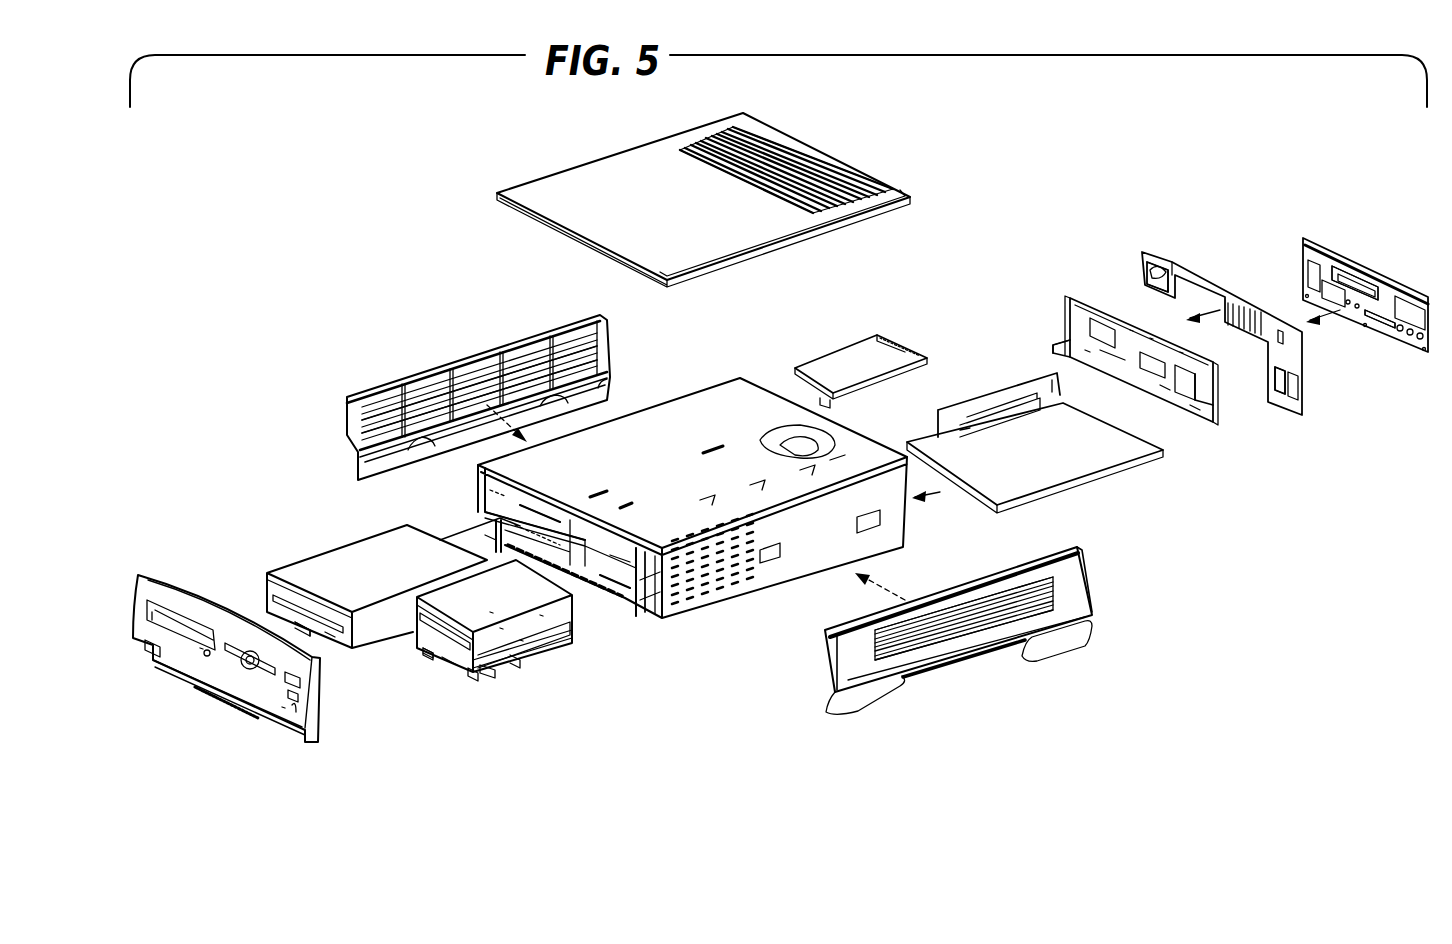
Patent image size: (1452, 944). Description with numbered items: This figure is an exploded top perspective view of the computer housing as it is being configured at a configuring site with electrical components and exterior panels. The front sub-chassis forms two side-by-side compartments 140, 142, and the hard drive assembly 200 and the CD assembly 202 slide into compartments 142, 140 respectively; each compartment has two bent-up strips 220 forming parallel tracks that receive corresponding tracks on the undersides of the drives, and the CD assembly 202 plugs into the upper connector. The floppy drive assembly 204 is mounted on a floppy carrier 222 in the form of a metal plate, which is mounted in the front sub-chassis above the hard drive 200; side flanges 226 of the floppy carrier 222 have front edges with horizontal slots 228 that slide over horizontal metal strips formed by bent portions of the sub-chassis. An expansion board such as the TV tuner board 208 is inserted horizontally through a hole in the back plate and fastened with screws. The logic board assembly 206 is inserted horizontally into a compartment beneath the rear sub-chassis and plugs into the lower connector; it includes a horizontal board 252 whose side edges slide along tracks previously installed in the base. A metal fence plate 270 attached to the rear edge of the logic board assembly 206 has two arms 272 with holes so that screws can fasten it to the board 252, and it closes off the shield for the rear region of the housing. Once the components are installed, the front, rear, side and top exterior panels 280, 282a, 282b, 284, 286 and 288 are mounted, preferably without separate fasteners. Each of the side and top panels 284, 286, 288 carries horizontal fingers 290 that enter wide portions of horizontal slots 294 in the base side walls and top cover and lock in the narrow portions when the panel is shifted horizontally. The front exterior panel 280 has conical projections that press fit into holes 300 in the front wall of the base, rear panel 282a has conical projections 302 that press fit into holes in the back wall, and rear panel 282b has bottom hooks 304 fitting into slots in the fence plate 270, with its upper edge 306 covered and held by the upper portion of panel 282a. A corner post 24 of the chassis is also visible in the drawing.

The chassis corner post 24 is at (642, 598).
The compartment 140 is at (495, 485).
The compartment 142 is at (692, 498).
The hard drive assembly 200 is at (525, 655).
The CD assembly 202 is at (423, 540).
The floppy drive assembly 204 is at (572, 612).
The logic board assembly 206 is at (1013, 382).
The TV tuner board 208 is at (903, 338).
The bent-up strips 220 is at (575, 520).
The floppy carrier 222 is at (470, 676).
The side flanges 226 is at (410, 645).
The horizontal slots 228 is at (560, 638).
The horizontal board 252 is at (1068, 472).
The fence plate 270 is at (1072, 297).
The arms 272 is at (1058, 340).
The front exterior panel 280 is at (270, 733).
The rear panel 282a is at (1232, 285).
The rear panel 282b is at (1343, 248).
The side exterior panel 284 is at (1095, 583).
The side exterior panel 286 is at (622, 378).
The top exterior panel 288 is at (808, 138).
The horizontal fingers 290 is at (420, 380).
The horizontal slots 294 is at (713, 450).
The holes 300 is at (483, 550).
The conical projections 302 is at (1177, 262).
The bottom hooks 304 is at (1366, 326).
The upper edge 306 is at (1367, 265).